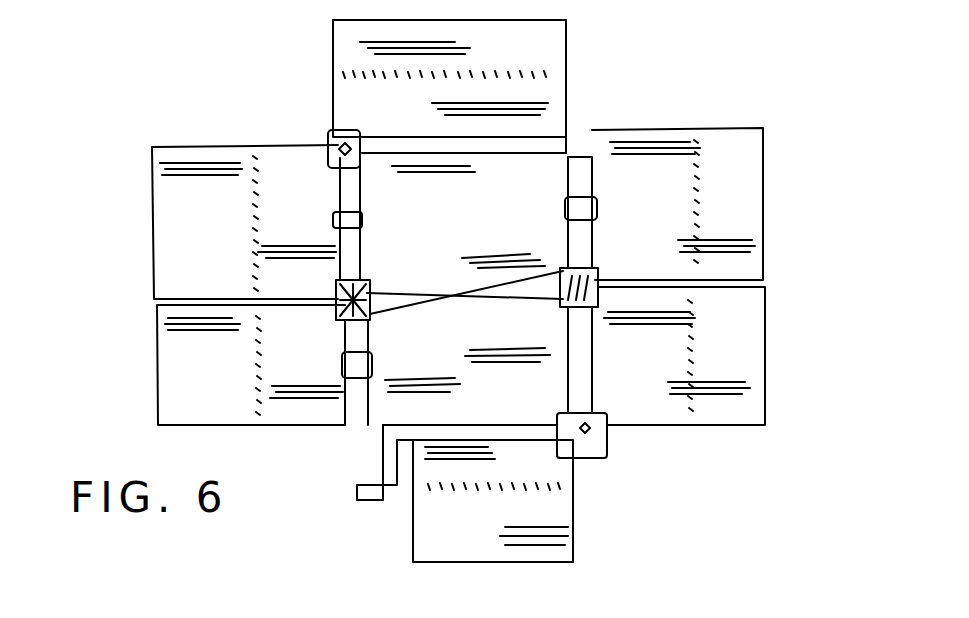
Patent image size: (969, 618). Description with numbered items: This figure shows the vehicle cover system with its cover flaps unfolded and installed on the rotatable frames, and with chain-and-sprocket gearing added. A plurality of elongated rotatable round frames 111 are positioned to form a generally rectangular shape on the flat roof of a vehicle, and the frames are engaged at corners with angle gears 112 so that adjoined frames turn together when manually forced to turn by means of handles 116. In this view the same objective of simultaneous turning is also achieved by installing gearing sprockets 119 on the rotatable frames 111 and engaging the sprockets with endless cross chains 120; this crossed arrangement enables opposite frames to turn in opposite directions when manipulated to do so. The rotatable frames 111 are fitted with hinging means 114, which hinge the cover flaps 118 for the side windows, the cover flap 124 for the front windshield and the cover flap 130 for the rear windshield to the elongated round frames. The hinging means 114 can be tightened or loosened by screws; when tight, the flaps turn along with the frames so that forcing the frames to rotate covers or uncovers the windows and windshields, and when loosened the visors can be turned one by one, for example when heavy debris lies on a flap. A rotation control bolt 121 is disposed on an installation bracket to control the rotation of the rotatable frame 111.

The elongated rotatable round frame 111 is at (578, 179).
The angle gear 112 is at (340, 148).
The hinging means 114 is at (353, 366).
The handle 116 is at (373, 500).
The cover flap for side windows 118 is at (198, 212).
The gearing sprocket 119 is at (593, 295).
The endless cross chain 120 is at (535, 297).
The rotation control bolt 121 is at (602, 210).
The cover flap for front windshield 124 is at (540, 500).
The cover flap for rear windshield 130 is at (552, 75).